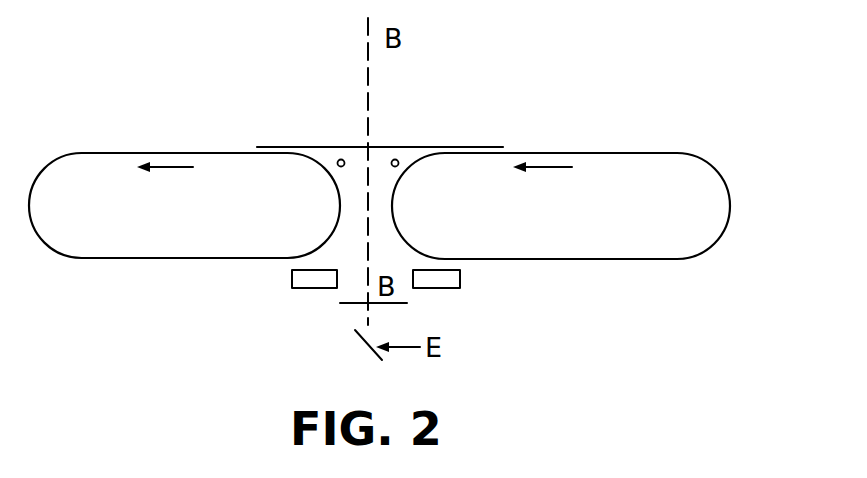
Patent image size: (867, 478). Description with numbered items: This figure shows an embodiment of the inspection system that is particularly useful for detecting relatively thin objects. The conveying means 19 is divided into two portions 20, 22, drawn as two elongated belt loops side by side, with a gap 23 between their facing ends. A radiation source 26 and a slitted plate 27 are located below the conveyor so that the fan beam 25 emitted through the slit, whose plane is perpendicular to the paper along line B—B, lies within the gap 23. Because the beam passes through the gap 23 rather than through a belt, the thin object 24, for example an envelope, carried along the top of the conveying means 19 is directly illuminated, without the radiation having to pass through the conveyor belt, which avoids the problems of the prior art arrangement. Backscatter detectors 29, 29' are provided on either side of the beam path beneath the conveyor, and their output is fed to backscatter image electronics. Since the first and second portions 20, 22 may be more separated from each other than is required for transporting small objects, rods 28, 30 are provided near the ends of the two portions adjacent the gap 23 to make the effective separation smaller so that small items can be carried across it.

The conveying means 19 is at (744, 246).
The first portion of the conveying means 20 is at (680, 153).
The second portion of the conveying means 22 is at (74, 153).
The gap 23 is at (359, 160).
The thin object 24 is at (285, 147).
The fan beam 25 is at (369, 231).
The radiation source 26 is at (425, 328).
The slitted plate 27 is at (339, 303).
The rod 28 is at (338, 163).
The backscatter detector 29 is at (287, 283).
The backscatter detector 29' is at (469, 283).
The rod 30 is at (398, 163).